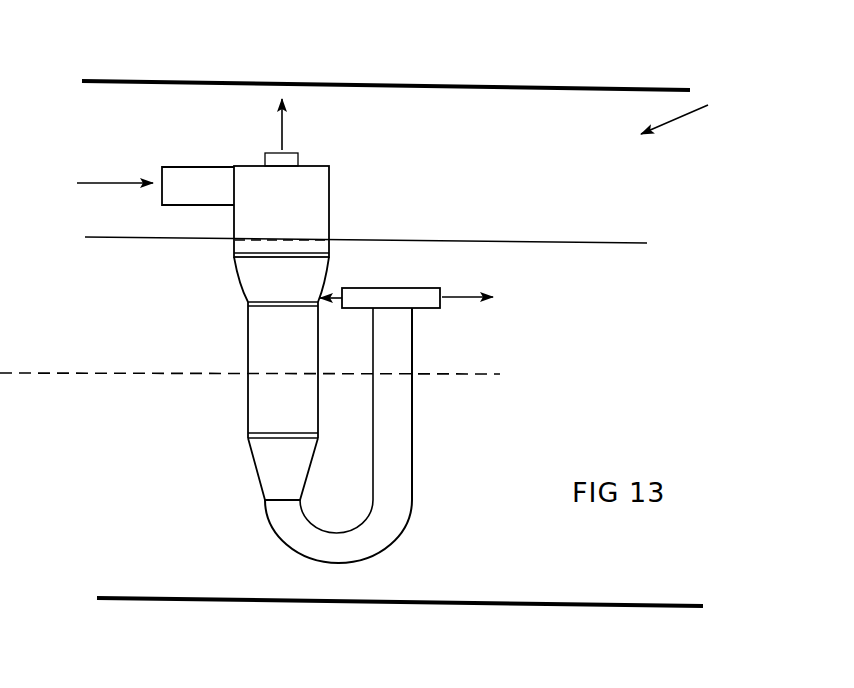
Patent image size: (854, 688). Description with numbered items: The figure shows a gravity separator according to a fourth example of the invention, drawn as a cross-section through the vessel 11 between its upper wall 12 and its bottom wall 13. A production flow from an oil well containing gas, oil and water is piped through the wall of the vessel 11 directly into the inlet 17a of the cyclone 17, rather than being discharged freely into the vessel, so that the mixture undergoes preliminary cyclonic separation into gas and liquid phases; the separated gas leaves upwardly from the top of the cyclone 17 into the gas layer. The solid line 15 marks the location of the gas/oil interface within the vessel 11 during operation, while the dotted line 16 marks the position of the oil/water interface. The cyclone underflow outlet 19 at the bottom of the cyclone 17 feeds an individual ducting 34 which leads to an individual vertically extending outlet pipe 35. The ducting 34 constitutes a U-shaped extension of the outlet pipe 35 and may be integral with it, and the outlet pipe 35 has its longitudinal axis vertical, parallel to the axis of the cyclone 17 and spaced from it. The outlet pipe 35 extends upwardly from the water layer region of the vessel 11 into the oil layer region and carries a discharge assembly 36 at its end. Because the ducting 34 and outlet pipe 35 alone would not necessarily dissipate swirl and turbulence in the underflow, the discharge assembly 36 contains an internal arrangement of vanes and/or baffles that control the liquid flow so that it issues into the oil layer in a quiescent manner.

The vessel 11 is at (693, 110).
The upper wall of duct 12 is at (604, 88).
The bottom wall 13 is at (607, 607).
The gas/oil interface line 15 is at (615, 243).
The oil/water interface line 16 is at (482, 374).
The cyclone 17 is at (247, 338).
The inlet of the cyclone 17a is at (180, 176).
The cyclone underflow outlet 19 is at (280, 500).
The ducting 34 is at (283, 523).
The outlet pipe 35 is at (400, 433).
The discharge assembly 36 is at (430, 290).